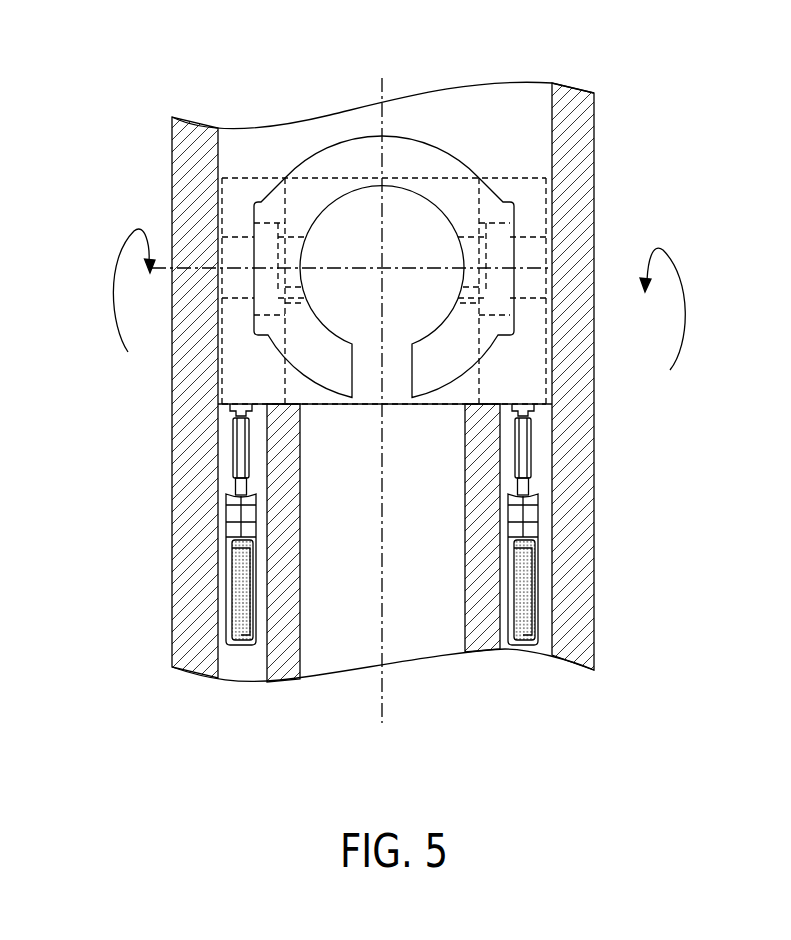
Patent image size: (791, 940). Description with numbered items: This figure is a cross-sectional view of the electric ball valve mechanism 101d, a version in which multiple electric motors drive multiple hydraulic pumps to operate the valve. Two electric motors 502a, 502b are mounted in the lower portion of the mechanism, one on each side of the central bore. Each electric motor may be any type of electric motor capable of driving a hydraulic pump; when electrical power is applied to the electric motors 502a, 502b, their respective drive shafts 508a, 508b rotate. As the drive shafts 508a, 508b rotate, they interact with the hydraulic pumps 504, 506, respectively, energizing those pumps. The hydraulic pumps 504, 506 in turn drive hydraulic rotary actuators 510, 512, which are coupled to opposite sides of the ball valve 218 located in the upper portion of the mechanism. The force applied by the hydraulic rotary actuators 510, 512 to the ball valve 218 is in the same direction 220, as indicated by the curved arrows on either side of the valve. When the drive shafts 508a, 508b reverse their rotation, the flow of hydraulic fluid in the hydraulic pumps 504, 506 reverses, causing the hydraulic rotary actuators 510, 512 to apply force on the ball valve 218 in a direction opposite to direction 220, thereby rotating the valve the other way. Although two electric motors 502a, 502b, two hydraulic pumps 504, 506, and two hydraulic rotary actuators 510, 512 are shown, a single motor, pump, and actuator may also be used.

The electric ball valve mechanism 101d is at (622, 81).
The ball valve 218 is at (437, 164).
The direction 220 is at (115, 298).
The electric motor 502a is at (228, 602).
The electric motor 502b is at (528, 572).
The hydraulic pump 504 is at (218, 343).
The hydraulic pump 506 is at (553, 358).
The drive shaft 508a is at (236, 406).
The drive shaft 508b is at (526, 413).
The hydraulic rotary actuator 510 is at (228, 290).
The hydraulic rotary actuator 512 is at (528, 276).